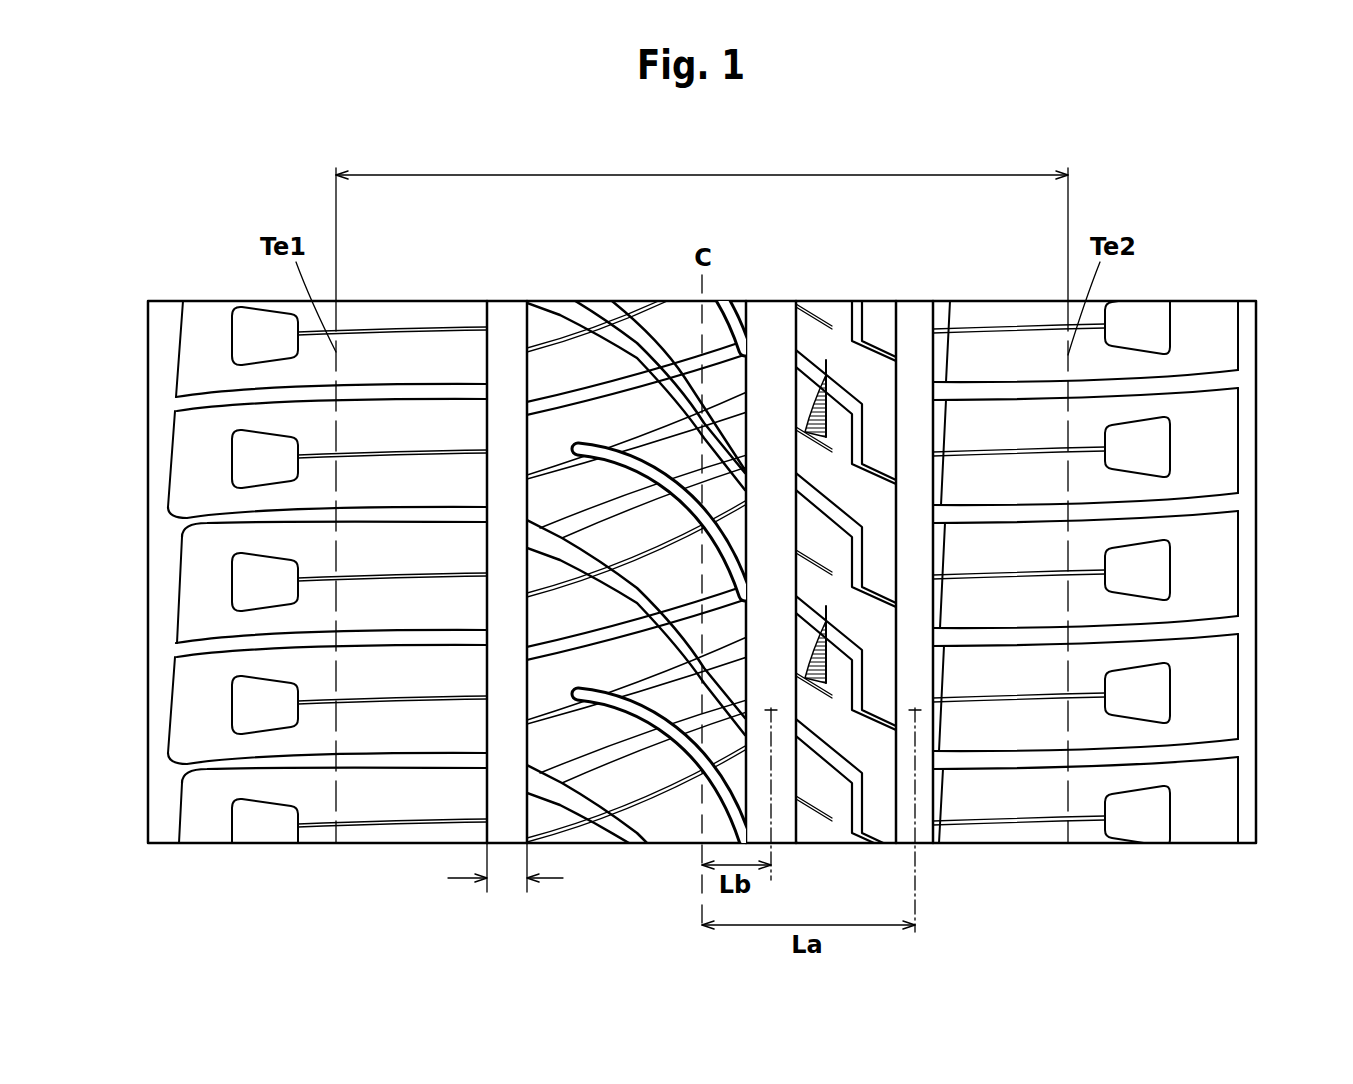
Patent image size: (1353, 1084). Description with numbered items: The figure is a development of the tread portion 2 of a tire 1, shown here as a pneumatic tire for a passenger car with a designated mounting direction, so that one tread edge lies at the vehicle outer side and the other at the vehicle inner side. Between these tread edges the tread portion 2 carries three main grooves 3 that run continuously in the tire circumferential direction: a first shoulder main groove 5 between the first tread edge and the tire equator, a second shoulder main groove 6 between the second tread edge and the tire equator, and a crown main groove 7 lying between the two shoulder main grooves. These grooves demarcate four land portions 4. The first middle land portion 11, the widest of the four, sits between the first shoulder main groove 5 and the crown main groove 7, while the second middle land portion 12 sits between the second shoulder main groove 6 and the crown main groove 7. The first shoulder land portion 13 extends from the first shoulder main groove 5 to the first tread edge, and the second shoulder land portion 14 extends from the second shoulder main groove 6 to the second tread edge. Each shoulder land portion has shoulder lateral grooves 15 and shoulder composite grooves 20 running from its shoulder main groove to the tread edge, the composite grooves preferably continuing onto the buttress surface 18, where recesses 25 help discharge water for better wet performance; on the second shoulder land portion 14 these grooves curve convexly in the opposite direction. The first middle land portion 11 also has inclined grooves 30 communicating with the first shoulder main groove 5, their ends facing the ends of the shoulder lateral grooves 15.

The tire 1 is at (965, 287).
The tread portion 2 is at (455, 287).
The main grooves 3 is at (503, 735).
The land portions 4 is at (557, 370).
The first shoulder main groove 5 is at (507, 338).
The second shoulder main groove 6 is at (912, 338).
The crown main groove 7 is at (768, 335).
The first middle land portion 11 is at (658, 340).
The second middle land portion 12 is at (843, 340).
The first shoulder land portion 13 is at (403, 325).
The second shoulder land portion 14 is at (1003, 355).
The shoulder lateral grooves 15 is at (408, 394).
The buttress surface 18 is at (208, 330).
The shoulder composite grooves 20 is at (398, 452).
The recesses 25 is at (266, 579).
The inclined grooves 30 is at (577, 803).